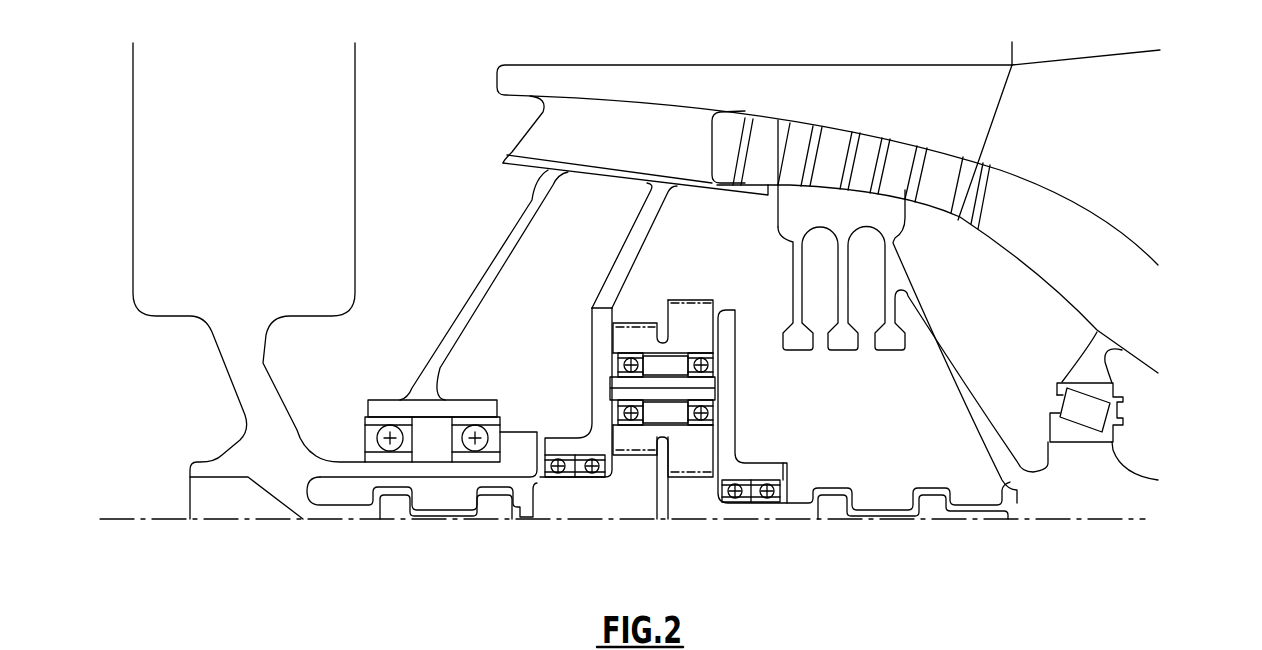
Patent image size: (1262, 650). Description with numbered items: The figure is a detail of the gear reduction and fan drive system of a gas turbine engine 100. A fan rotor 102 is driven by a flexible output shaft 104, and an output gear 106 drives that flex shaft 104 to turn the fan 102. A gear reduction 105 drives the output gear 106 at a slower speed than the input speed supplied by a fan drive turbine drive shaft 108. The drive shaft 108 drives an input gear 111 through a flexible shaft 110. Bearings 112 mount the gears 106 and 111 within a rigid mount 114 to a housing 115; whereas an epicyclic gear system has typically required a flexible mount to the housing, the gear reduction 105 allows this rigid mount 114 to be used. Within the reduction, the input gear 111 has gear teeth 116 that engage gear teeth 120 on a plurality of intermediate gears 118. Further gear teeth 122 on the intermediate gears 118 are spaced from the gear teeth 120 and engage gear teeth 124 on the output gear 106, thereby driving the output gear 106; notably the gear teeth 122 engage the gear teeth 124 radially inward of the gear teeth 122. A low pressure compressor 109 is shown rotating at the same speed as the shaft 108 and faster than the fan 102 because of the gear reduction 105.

The engine 100 is at (1136, 125).
The fan rotor 102 is at (331, 90).
The flexible output shaft 104 is at (420, 517).
The gear reduction 105 is at (565, 356).
The output gear 106 is at (635, 513).
The fan drive turbine drive shaft 108 is at (1068, 508).
The low pressure compressor 109 is at (903, 147).
The flexible shaft 110 is at (935, 487).
The input gear 111 is at (697, 519).
The bearings 112 is at (548, 452).
The rigid mount 114 is at (630, 247).
The housing 115 is at (538, 167).
The gear teeth 116 is at (697, 473).
The intermediate gears 118 is at (702, 328).
The gear teeth 120 is at (690, 298).
The gear teeth 122 is at (622, 322).
The gear teeth 124 is at (637, 450).